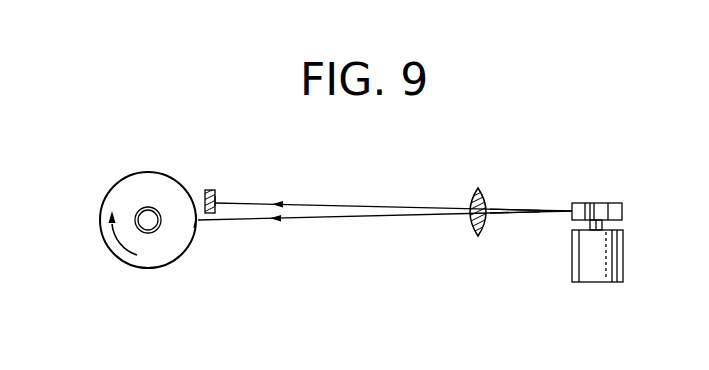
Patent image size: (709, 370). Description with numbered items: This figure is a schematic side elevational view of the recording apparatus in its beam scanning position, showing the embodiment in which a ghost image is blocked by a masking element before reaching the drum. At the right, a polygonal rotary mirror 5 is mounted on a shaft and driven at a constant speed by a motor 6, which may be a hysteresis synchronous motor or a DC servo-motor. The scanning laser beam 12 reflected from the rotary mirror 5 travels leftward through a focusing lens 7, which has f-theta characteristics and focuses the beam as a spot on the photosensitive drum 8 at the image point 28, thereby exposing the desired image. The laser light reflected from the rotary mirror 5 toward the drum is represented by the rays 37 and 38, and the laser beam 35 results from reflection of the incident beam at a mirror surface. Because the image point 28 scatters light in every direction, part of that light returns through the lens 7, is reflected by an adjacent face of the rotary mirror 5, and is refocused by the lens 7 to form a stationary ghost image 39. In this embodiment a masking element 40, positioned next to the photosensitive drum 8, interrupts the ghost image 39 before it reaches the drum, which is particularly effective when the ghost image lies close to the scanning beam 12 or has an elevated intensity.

The photosensitive drum 8 is at (152, 172).
The masking element 40 is at (205, 190).
The ghost image 39 is at (215, 200).
The image point 28 is at (199, 226).
The laser light reflected from the rotary mirror 38 is at (306, 203).
The scanning laser beam 12 is at (296, 221).
The laser light reflected from the rotary mirror 37 is at (507, 209).
The laser beam 35 is at (509, 215).
The focusing lens 7 is at (478, 237).
The polygonal rotary mirror 5 is at (622, 211).
The motor 6 is at (623, 250).